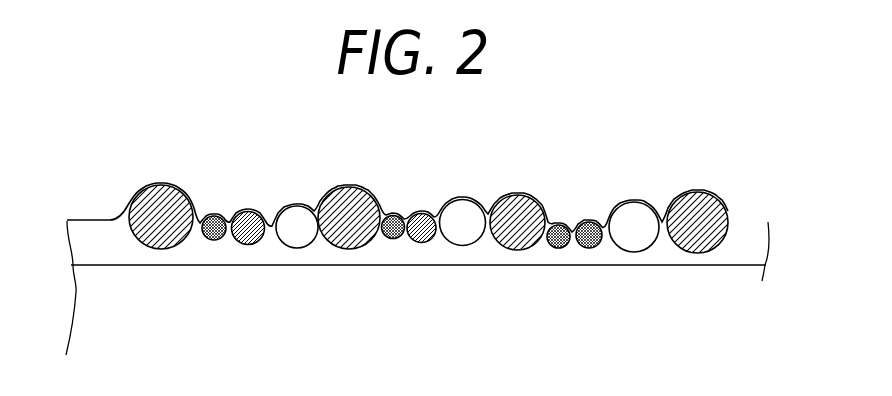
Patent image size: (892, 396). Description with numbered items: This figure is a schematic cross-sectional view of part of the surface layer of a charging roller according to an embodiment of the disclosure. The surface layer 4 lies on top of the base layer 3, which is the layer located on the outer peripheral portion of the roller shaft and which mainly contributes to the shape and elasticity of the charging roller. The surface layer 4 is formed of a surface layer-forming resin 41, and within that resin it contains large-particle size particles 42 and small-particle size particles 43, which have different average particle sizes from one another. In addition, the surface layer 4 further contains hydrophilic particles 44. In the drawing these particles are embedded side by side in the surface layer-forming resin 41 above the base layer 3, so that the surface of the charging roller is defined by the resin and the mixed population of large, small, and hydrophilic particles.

The base layer 3 is at (424, 323).
The surface layer 4 is at (777, 187).
The surface layer-forming resin 41 is at (88, 242).
The large-particle size particles 42 is at (157, 203).
The small-particle size particles 43 is at (250, 212).
The hydrophilic particles 44 is at (297, 220).